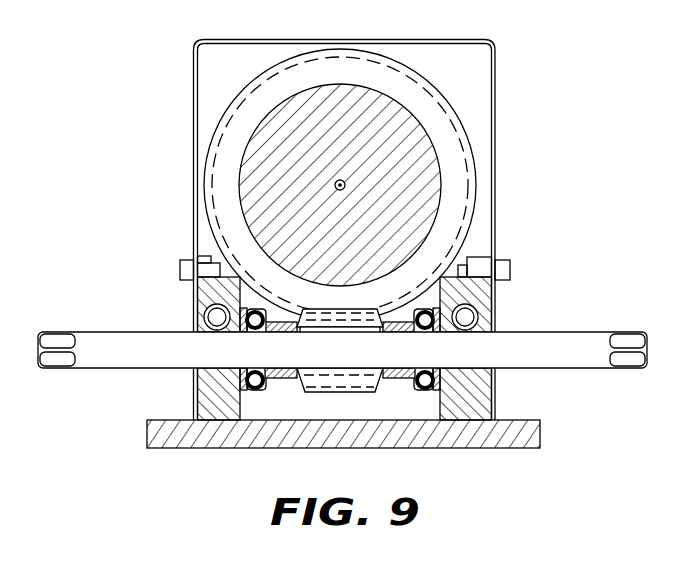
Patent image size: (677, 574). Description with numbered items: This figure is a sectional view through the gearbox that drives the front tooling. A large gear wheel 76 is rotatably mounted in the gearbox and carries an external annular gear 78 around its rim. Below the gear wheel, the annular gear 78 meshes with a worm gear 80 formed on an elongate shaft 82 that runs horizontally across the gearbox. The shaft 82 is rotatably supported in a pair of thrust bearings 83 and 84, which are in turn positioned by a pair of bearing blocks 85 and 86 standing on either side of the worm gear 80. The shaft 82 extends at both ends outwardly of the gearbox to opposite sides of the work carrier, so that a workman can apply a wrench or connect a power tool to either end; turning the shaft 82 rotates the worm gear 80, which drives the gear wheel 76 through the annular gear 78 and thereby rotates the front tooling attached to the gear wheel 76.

The gear wheel 76 is at (395, 96).
The external annular gear 78 is at (496, 178).
The worm gear 80 is at (355, 393).
The elongate shaft 82 is at (561, 332).
The thrust bearing 83 is at (245, 390).
The thrust bearing 84 is at (430, 392).
The bearing block 85 is at (193, 399).
The bearing block 86 is at (494, 405).